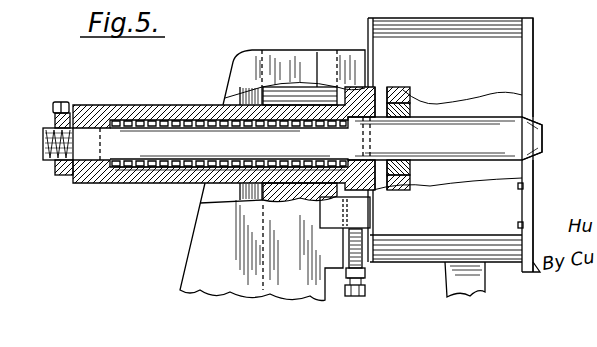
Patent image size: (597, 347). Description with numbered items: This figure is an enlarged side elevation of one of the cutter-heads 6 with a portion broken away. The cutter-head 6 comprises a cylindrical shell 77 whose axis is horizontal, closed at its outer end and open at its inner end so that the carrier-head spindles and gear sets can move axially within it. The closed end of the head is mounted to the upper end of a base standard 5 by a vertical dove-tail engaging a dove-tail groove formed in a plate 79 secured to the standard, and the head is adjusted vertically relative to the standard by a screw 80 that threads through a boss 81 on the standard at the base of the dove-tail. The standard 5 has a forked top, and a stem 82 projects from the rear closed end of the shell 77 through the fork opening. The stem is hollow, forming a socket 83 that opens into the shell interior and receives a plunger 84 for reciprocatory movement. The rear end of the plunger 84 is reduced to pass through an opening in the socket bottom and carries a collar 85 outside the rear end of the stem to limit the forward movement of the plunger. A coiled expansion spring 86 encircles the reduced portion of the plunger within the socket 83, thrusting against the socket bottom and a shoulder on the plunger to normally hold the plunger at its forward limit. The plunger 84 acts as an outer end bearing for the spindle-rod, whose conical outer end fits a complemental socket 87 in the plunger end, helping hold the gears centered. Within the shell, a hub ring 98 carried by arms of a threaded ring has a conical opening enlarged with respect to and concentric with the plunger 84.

The base standard 5 is at (275, 175).
The cutter-head 6 is at (446, 233).
The cylindrical shell 77 is at (454, 157).
The plate 79 is at (327, 88).
The screw 80 is at (364, 291).
The boss 81 is at (363, 262).
The stem 82 is at (185, 180).
The socket 83 is at (143, 168).
The plunger 84 is at (326, 138).
The collar 85 is at (68, 170).
The coiled expansion spring 86 is at (195, 105).
The socket 87 is at (543, 135).
The hub ring 98 is at (392, 88).